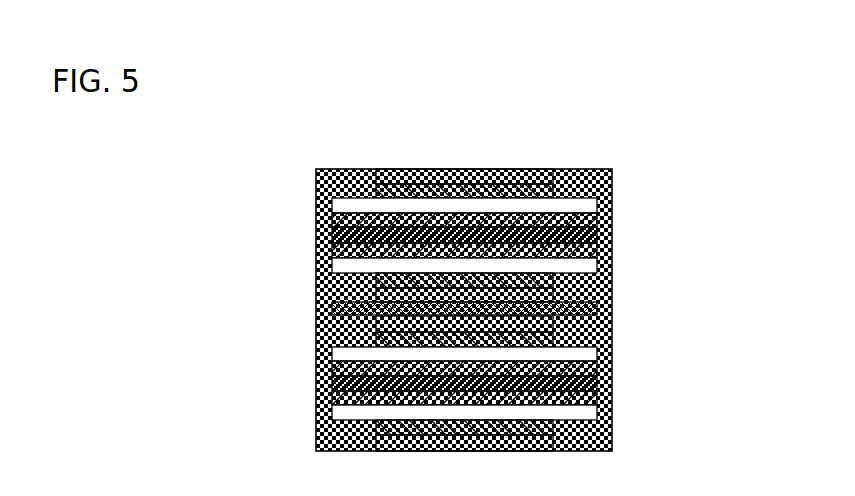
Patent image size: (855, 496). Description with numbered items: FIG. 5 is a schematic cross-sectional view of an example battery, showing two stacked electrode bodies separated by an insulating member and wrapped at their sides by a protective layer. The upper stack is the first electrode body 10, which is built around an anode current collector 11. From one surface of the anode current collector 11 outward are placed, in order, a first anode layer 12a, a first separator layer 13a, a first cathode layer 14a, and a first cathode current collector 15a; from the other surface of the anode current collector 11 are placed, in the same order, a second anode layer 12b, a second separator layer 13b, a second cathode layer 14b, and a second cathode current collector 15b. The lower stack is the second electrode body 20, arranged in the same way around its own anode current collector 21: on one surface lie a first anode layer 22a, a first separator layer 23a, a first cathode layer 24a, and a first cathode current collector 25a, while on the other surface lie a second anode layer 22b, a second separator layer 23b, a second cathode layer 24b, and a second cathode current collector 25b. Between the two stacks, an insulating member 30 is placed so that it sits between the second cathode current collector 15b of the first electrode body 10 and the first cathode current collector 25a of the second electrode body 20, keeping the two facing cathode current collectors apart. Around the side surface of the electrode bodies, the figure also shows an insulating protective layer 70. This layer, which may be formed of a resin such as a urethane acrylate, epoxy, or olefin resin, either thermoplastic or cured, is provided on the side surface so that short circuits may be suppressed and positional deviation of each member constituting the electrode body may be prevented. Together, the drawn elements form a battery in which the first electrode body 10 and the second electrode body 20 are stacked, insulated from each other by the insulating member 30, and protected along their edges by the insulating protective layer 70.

The first electrode body 10 is at (382, 237).
The anode current collector 11 is at (332, 236).
The first anode layer 12a is at (347, 221).
The second anode layer 12b is at (347, 251).
The first separator layer 13a is at (332, 206).
The second separator layer 13b is at (332, 266).
The first cathode layer 14a is at (397, 194).
The second cathode layer 14b is at (397, 281).
The first cathode current collector 15a is at (316, 173).
The second cathode current collector 15b is at (384, 297).
The second electrode body 20 is at (381, 385).
The anode current collector 21 is at (332, 384).
The first anode layer 22a is at (347, 369).
The second anode layer 22b is at (347, 399).
The first separator layer 23a is at (332, 354).
The second separator layer 23b is at (332, 414).
The first cathode layer 24a is at (397, 342).
The second cathode layer 24b is at (397, 429).
The first cathode current collector 25a is at (316, 323).
The second cathode current collector 25b is at (383, 445).
The insulating member 30 is at (332, 309).
The insulating protective layer 70 is at (603, 282).